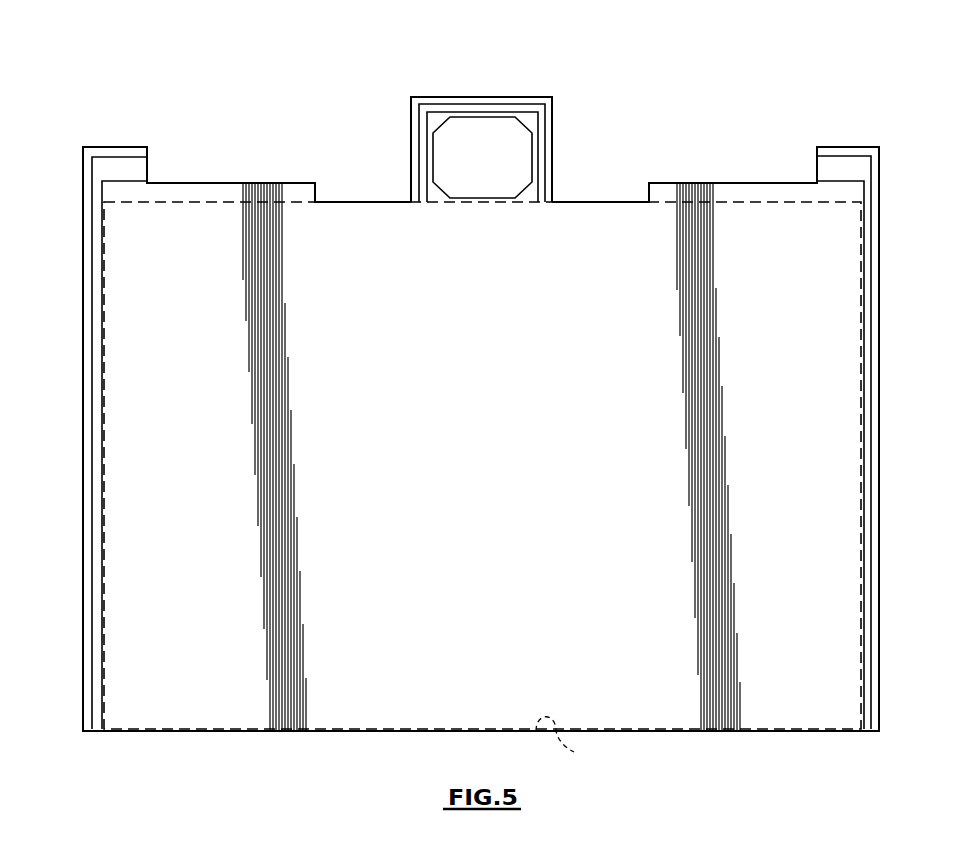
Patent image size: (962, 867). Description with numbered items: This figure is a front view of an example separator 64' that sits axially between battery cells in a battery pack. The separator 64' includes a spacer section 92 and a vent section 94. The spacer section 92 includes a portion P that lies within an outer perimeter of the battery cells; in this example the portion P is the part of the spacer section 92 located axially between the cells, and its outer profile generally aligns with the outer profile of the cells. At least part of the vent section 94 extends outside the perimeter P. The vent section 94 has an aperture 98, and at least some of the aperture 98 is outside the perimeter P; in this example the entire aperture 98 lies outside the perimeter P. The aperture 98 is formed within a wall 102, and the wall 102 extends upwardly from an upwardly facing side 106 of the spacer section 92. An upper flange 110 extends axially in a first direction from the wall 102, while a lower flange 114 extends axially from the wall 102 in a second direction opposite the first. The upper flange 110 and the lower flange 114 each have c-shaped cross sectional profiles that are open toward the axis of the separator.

The separator 64' is at (522, 408).
The spacer section 92 is at (773, 430).
The vent section 94 is at (480, 126).
The aperture 98 is at (460, 157).
The wall 102 is at (527, 120).
The upwardly facing side 106 is at (589, 200).
The upper flange 110 is at (553, 121).
The lower flange 114 is at (541, 156).
The portion P is at (563, 743).